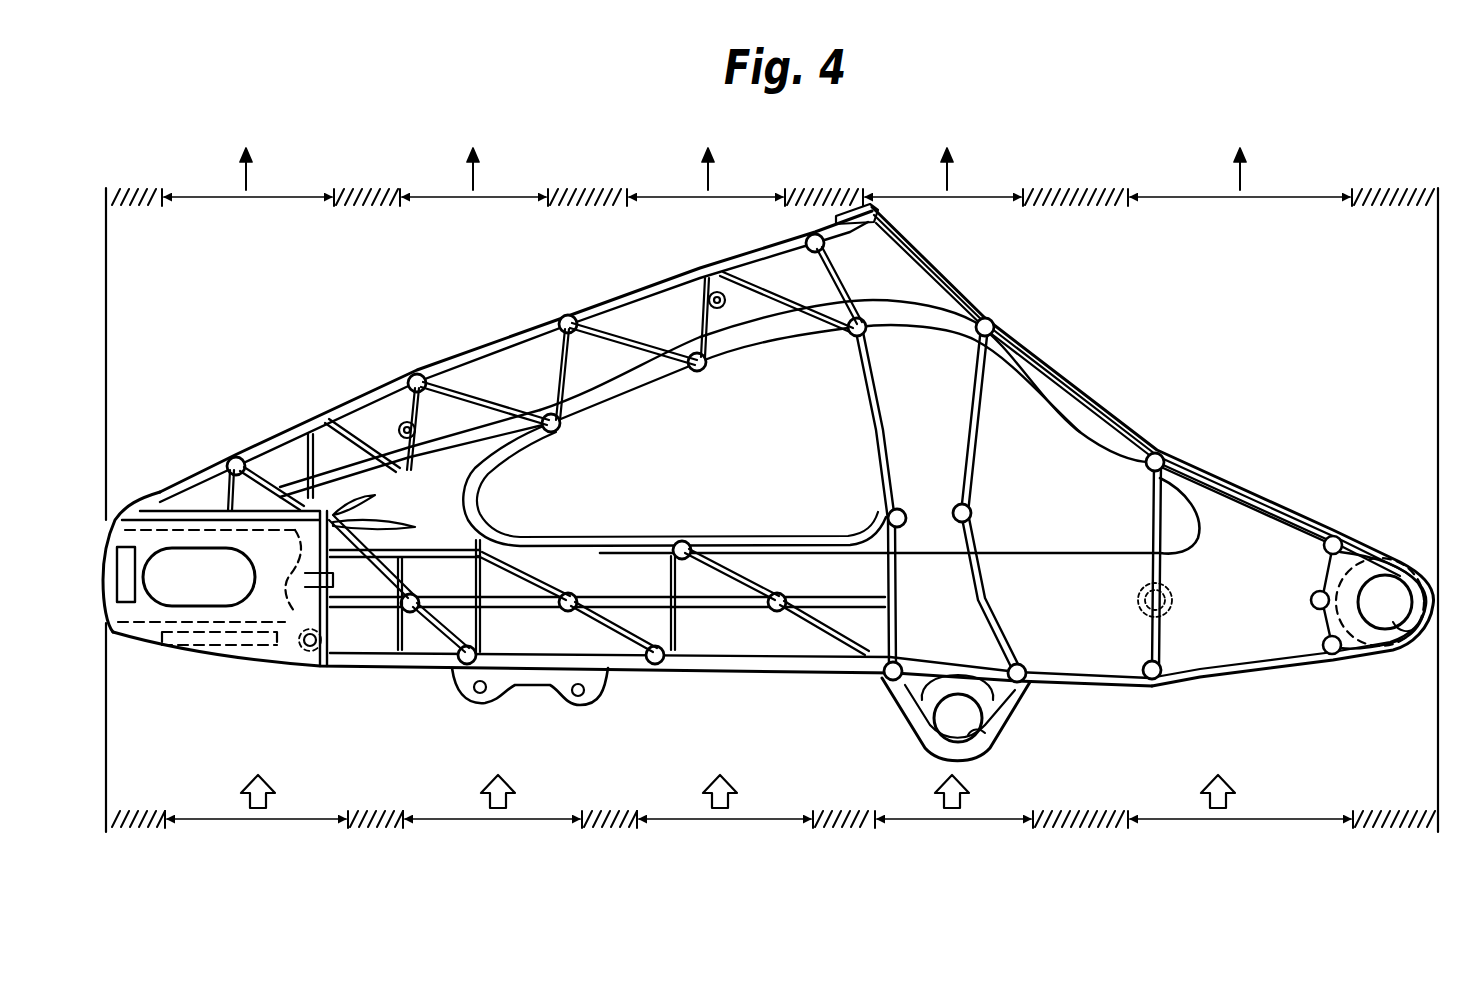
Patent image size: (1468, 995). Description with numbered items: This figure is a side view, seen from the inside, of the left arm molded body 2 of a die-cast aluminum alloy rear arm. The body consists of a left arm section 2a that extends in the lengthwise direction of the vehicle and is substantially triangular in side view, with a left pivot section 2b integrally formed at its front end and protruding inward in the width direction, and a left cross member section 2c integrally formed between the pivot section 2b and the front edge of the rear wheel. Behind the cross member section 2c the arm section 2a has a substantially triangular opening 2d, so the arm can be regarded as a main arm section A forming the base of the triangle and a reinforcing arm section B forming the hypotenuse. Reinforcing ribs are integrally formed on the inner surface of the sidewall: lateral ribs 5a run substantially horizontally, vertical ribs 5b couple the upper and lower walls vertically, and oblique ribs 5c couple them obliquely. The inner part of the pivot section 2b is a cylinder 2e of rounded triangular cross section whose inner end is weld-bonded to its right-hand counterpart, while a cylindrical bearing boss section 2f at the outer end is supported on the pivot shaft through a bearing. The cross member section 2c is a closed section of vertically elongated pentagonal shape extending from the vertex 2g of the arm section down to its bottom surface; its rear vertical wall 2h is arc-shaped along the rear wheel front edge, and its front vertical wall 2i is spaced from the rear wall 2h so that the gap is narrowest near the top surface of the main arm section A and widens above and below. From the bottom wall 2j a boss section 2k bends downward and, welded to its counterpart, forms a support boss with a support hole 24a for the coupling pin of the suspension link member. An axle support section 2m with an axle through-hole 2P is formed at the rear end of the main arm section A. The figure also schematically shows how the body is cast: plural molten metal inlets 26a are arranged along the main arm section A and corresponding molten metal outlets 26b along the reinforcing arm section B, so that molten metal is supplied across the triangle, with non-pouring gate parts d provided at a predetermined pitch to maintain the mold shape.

The left arm molded body 2 is at (690, 272).
The left arm section 2a is at (767, 683).
The left pivot section 2b is at (1385, 538).
The left cross member section 2c is at (992, 478).
The opening 2d is at (660, 385).
The left cylinder 2e is at (1405, 575).
The left bearing boss section 2f is at (1436, 594).
The vertex of left arm section 2g is at (871, 207).
The rear vertical wall 2h is at (874, 450).
The front vertical wall 2i is at (990, 448).
The bottom wall 2j is at (937, 670).
The left boss section 2k is at (917, 735).
The axle support section 2m is at (188, 652).
The axle through-hole 2P is at (212, 606).
The lateral ribs 5a is at (832, 598).
The vertical ribs 5b is at (1150, 520).
The oblique ribs 5c is at (730, 572).
The support hole 24a is at (975, 732).
The molten metal inlets 26a is at (1226, 858).
The molten metal outlets 26b is at (1262, 230).
The main arm section A is at (688, 672).
The reinforcing arm section B is at (1040, 352).
The non-pouring gate parts d is at (377, 812).